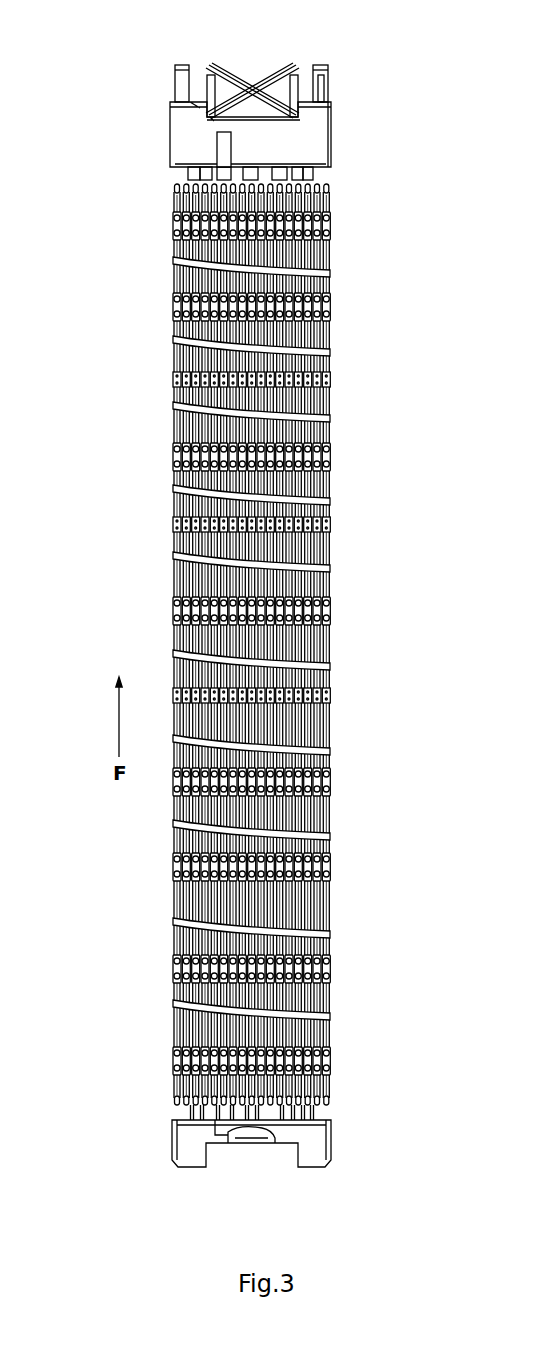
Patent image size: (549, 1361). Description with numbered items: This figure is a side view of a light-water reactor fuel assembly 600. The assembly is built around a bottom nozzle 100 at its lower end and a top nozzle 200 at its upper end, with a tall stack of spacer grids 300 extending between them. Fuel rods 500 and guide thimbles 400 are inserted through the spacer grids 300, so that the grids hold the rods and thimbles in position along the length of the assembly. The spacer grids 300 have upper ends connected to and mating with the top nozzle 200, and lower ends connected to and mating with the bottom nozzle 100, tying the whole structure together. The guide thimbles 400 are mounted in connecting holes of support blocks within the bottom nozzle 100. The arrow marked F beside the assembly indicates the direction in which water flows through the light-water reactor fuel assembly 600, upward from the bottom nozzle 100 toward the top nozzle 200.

The light-water reactor fuel assembly 600 is at (99, 79).
The top nozzle 200 is at (342, 125).
The guide thimbles 400 is at (331, 176).
The spacer grids 300 is at (341, 311).
The fuel rods 500 is at (342, 1088).
The bottom nozzle 100 is at (344, 1140).